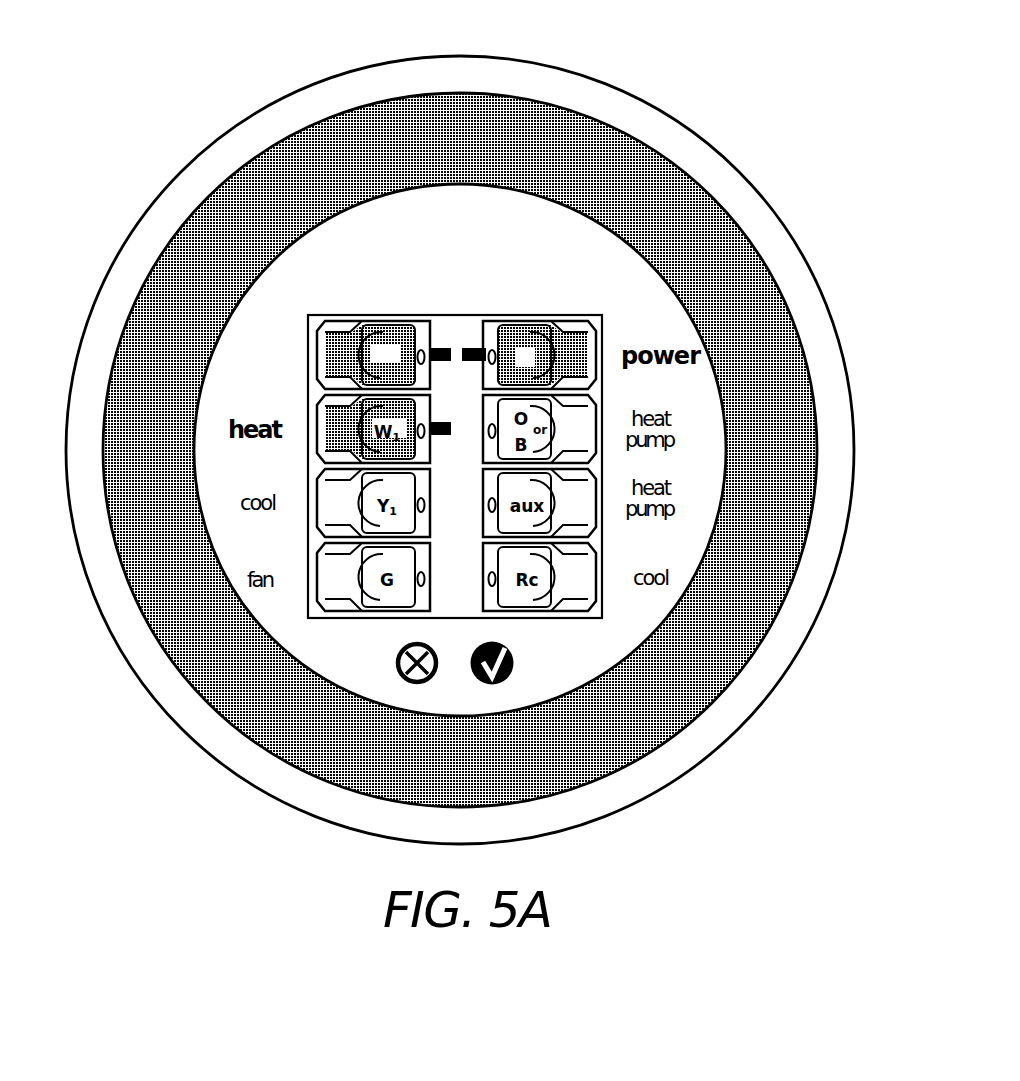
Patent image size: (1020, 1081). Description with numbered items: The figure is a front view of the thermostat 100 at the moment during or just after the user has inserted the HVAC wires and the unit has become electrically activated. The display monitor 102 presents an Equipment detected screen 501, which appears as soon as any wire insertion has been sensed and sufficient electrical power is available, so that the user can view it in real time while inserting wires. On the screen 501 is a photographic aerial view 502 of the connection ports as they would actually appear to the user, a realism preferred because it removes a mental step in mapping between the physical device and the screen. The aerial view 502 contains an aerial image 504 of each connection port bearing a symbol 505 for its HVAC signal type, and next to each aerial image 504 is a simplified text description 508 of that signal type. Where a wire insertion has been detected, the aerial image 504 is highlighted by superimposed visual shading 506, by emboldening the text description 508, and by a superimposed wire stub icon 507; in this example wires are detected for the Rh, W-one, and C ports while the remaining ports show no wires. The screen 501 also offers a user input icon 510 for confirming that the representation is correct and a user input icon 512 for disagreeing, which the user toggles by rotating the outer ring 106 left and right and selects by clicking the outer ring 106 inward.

The thermostat 100 is at (173, 160).
The outer ring 106 is at (724, 191).
The display monitor 102 is at (673, 311).
The Equipment detected screen 501 is at (528, 237).
The photographic aerial view 502 is at (486, 314).
The aerial image 504 is at (333, 327).
The symbol 505 is at (400, 347).
The visual shading 506 is at (337, 363).
The wire stub icon 507 is at (445, 348).
The simplified text description 508 is at (255, 337).
The user input icon 510 is at (514, 660).
The user input icon 512 is at (396, 662).